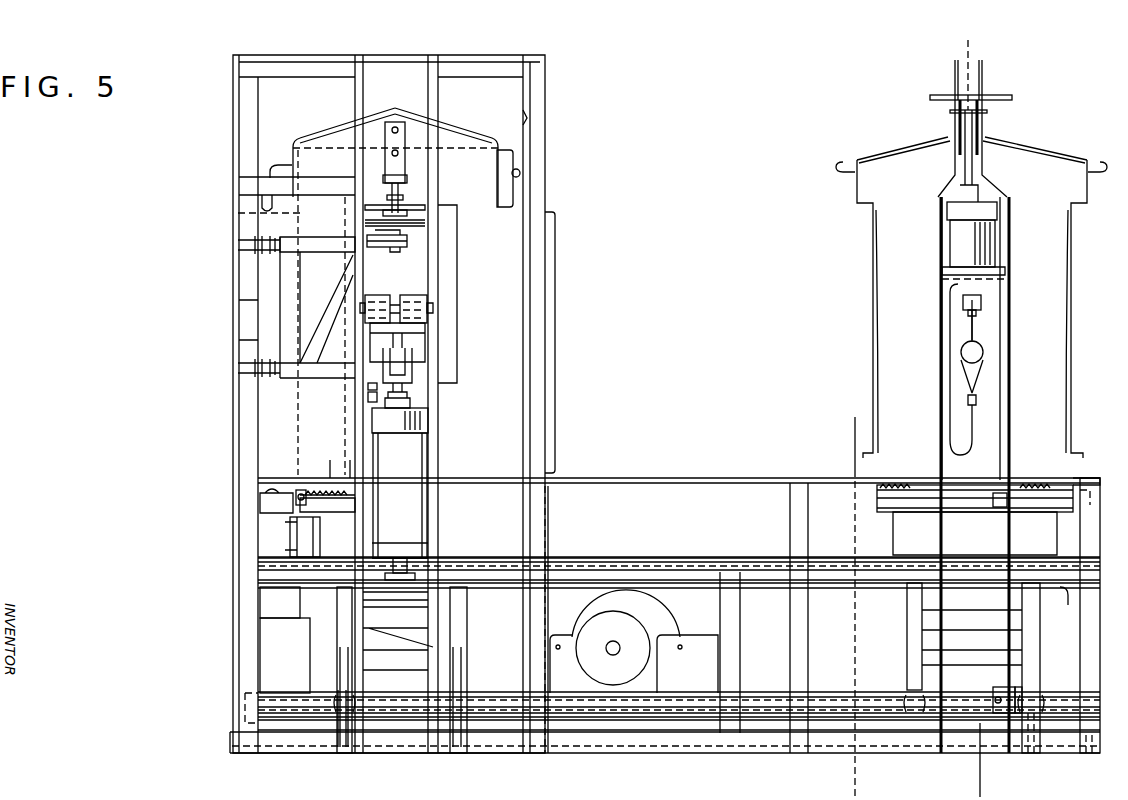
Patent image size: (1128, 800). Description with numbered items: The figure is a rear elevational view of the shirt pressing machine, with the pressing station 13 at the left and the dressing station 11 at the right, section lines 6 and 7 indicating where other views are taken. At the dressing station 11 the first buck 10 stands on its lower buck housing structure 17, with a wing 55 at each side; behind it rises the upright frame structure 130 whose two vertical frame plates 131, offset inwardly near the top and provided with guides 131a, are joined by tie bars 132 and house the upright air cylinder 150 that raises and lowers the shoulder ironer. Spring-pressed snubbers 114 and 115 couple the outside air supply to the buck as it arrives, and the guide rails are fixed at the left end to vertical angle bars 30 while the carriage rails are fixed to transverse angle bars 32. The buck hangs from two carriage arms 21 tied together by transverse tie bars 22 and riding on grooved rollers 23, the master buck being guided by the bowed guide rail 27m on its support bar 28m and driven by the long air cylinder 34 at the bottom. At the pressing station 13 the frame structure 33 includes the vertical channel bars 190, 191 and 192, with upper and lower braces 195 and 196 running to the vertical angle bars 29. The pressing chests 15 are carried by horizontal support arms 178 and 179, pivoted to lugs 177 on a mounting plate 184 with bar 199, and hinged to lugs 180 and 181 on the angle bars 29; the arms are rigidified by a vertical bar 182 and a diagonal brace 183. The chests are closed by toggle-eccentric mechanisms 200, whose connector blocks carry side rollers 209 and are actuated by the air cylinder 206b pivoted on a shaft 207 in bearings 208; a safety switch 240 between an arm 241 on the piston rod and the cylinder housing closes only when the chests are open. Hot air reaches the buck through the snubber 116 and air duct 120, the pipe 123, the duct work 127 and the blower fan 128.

The pressing station 13 is at (545, 52).
The dressing station 11 is at (835, 52).
The section line 6 is at (974, 48).
The section line 7 is at (340, 152).
The vertical channel bar 191 is at (437, 112).
The vertical channel bar 192 is at (355, 97).
The pressing chests 15 is at (509, 147).
The upper brace 195 is at (332, 183).
The cross bar 199 is at (425, 207).
The mounting plate 184 is at (455, 221).
The upper pair of lugs 177 is at (407, 241).
The horizontal support arm 179 is at (347, 238).
The lug 181 is at (238, 245).
The lug 180 is at (240, 375).
The vertical channel bar 190 is at (240, 318).
The vertical bar 182 is at (297, 270).
The diagonal brace 183 is at (330, 325).
The horizontal support arm 178 is at (302, 381).
The toggle-eccentric mechanism 200 is at (440, 326).
The side rollers 209 is at (427, 360).
The arm 241 is at (368, 386).
The safety switch 240 is at (368, 398).
The air cylinder 206b is at (410, 458).
The bearings 208 is at (430, 573).
The shaft 207 is at (462, 600).
The lower brace 196 is at (345, 442).
The spring-pressed snubber 116 is at (267, 487).
The air duct 120 is at (272, 532).
The vertical angle bars 29 is at (245, 553).
The frame structure 33 is at (233, 661).
The pipe 123 is at (278, 690).
The carriage arms 21 is at (340, 620).
The transverse tie bars 22 is at (407, 618).
The grooved rollers 23 is at (477, 693).
The duct work 127 is at (513, 668).
The blower fan 128 is at (637, 608).
The guide rail 27m is at (770, 562).
The lower rail 28m is at (780, 582).
The air cylinder 34 is at (840, 697).
The guide rod 131a is at (955, 125).
The upright frame structure 130 is at (1014, 213).
The upright air cylinder 150 is at (960, 238).
The tie bars 132 is at (1003, 272).
The vertical frame plates 131 is at (1012, 412).
The wing 55 is at (857, 250).
The first buck 10 is at (873, 318).
The lower buck housing structure 17 is at (910, 533).
The spring-pressed snubber 115 is at (1088, 484).
The spring-pressed snubber 114 is at (1088, 508).
The vertical angle bars 30 is at (1085, 588).
The transverse angle bars 32 is at (1090, 755).